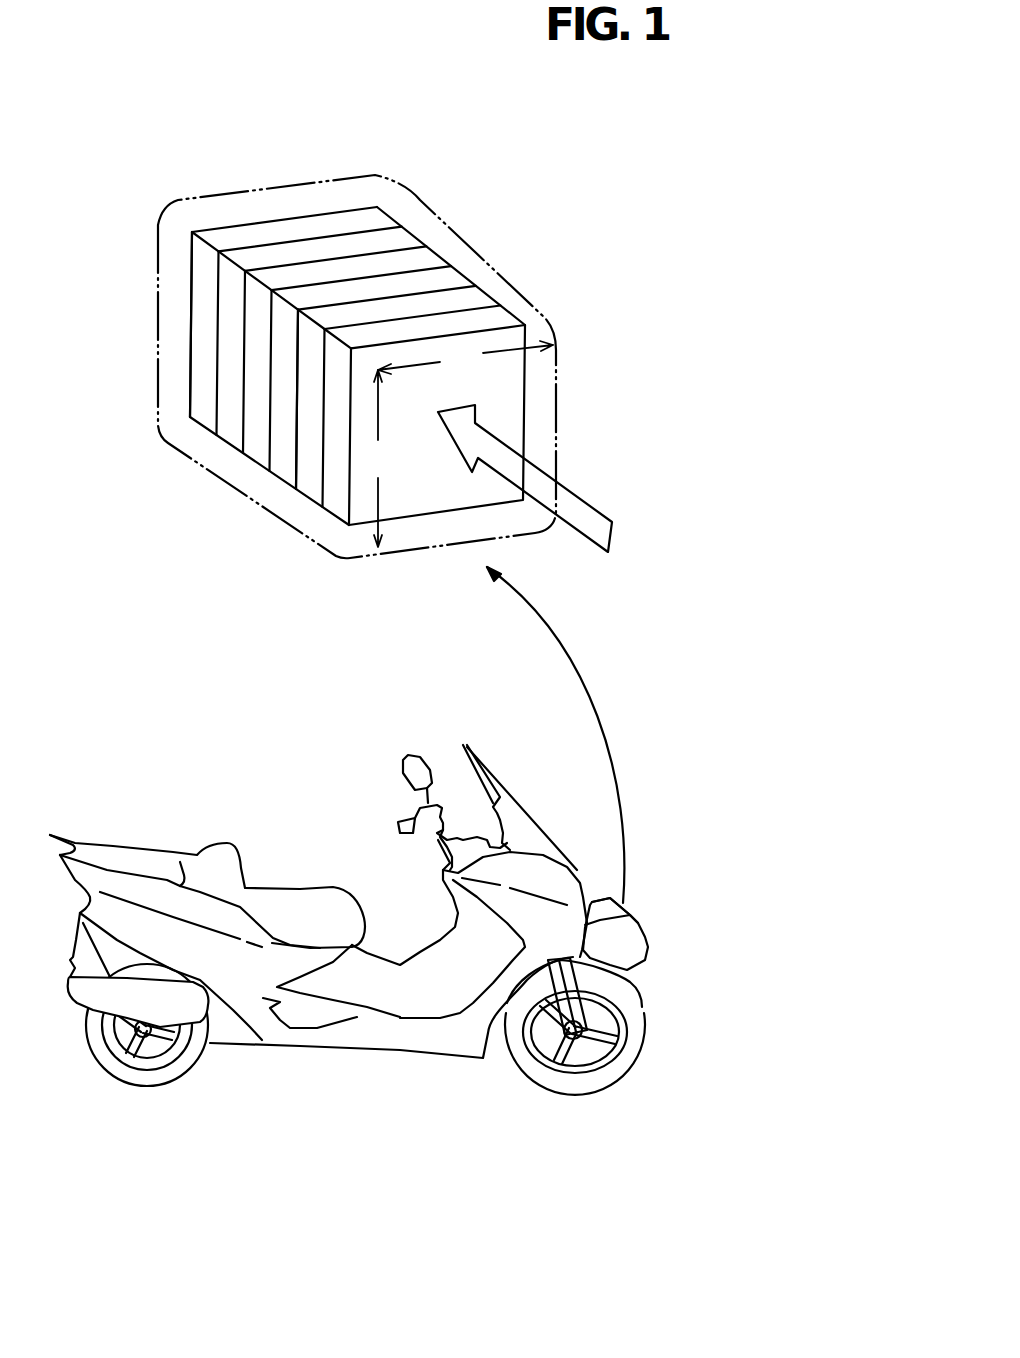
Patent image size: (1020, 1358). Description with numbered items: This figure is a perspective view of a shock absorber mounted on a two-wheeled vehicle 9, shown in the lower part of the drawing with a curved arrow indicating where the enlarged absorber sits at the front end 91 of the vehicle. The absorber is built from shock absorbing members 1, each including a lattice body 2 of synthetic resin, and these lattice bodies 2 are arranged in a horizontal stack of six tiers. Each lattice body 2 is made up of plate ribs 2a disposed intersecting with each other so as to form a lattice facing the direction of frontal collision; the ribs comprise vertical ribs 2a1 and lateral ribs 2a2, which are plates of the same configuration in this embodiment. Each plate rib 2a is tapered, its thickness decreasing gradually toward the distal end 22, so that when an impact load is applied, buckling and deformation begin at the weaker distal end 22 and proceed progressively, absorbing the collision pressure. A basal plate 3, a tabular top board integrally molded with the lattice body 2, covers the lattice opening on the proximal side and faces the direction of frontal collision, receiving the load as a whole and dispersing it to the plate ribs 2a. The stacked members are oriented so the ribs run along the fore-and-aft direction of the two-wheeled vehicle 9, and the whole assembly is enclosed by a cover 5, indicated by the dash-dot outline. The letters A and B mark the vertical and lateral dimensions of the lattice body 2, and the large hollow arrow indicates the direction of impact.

The shock absorbing member 1 is at (315, 373).
The lattice body 2 is at (202, 377).
The plate rib 2a is at (317, 364).
The vertical rib 2a1 is at (303, 460).
The lateral rib 2a2 is at (373, 260).
The basal plate 3 is at (410, 490).
The cover 5 is at (537, 288).
The distal end 22 is at (290, 218).
The two-wheeled vehicle 9 is at (378, 1028).
The front end 91 is at (640, 917).